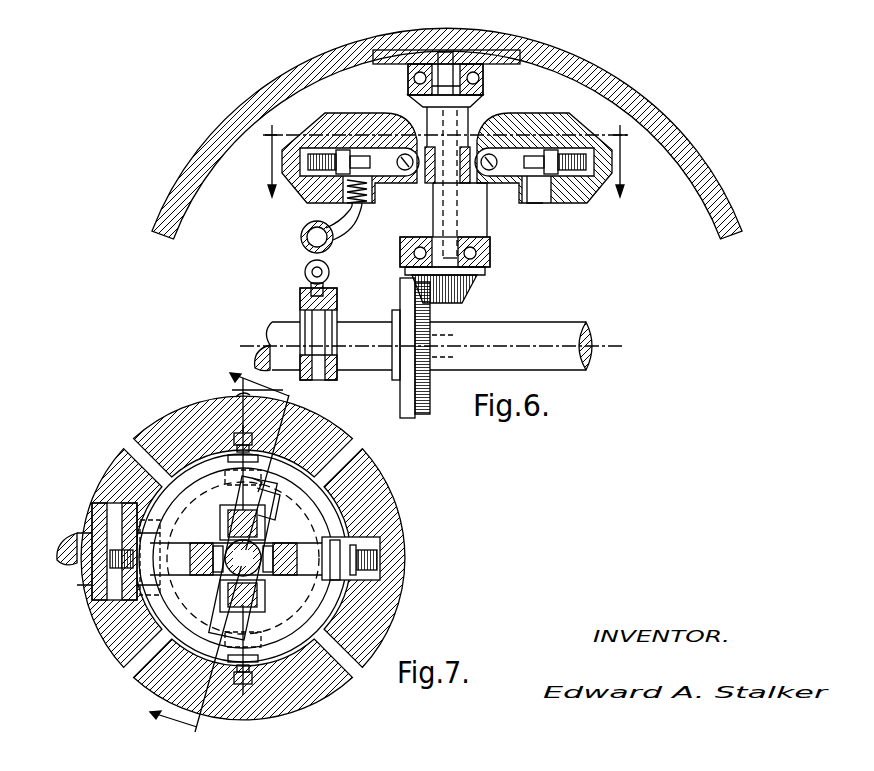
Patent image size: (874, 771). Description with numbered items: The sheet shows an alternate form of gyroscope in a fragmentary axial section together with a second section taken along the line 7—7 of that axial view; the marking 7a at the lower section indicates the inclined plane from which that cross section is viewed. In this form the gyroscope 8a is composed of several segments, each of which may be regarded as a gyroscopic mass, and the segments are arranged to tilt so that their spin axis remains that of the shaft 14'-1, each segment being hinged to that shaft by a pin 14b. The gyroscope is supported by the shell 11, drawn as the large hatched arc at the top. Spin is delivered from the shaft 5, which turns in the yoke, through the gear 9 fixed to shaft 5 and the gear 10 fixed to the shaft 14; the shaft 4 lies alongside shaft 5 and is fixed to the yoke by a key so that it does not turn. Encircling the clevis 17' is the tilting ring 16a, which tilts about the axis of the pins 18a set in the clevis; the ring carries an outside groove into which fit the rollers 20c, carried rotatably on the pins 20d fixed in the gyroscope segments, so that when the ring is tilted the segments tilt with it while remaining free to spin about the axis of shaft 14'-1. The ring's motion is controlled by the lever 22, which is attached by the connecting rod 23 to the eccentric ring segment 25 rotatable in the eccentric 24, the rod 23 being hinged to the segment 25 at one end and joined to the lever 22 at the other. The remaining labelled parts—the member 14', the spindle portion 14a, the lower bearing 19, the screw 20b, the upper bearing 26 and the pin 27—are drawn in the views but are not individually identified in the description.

In FIG. 6, the shaft 4 is at (258, 345).
In FIG. 7, the shaft 4 is at (70, 572).
In FIG. 6, the shaft 5 is at (364, 322).
In FIG. 7, the shaft 5 is at (378, 556).
In FIG. 6, the section line 7— 7 is at (446, 172).
In FIG. 7, the section line 7a is at (205, 545).
In FIG. 6, the gyroscope 8a is at (530, 112).
In FIG. 7, the gyroscope 8a is at (393, 492).
In FIG. 6, the gear 9 is at (420, 398).
In FIG. 6, the gear 10 is at (472, 290).
In FIG. 6, the shell 11 is at (701, 183).
In FIG. 7, the shaft 14 is at (243, 558).
In FIG. 6, the inner shaft 14' is at (432, 184).
In FIG. 6, the shaft 14'-1 is at (467, 101).
In FIG. 6, the spindle 14a is at (447, 127).
In FIG. 7, the spindle 14a is at (243, 558).
In FIG. 6, the pin 14b is at (414, 176).
In FIG. 7, the pin 14b is at (247, 559).
In FIG. 6, the tilting ring 16a is at (371, 181).
In FIG. 7, the tilting ring 16a is at (262, 598).
In FIG. 6, the clevis 17' is at (478, 210).
In FIG. 6, the pins 18a is at (475, 176).
In FIG. 7, the pins 18a is at (268, 515).
In FIG. 6, the bearing 19 is at (490, 256).
In FIG. 7, the adjusting screw 20b is at (252, 445).
In FIG. 6, the rollers 20c is at (518, 203).
In FIG. 7, the rollers 20c is at (260, 480).
In FIG. 6, the pins 20d is at (548, 176).
In FIG. 6, the lever 22 is at (356, 231).
In FIG. 6, the connecting rod 23 is at (302, 248).
In FIG. 6, the eccentric 24 is at (337, 378).
In FIG. 7, the eccentric 24 is at (97, 605).
In FIG. 6, the eccentric ring segment 25 is at (310, 283).
In FIG. 6, the upper bearing 26 is at (478, 72).
In FIG. 6, the pivot pin 27 is at (329, 278).